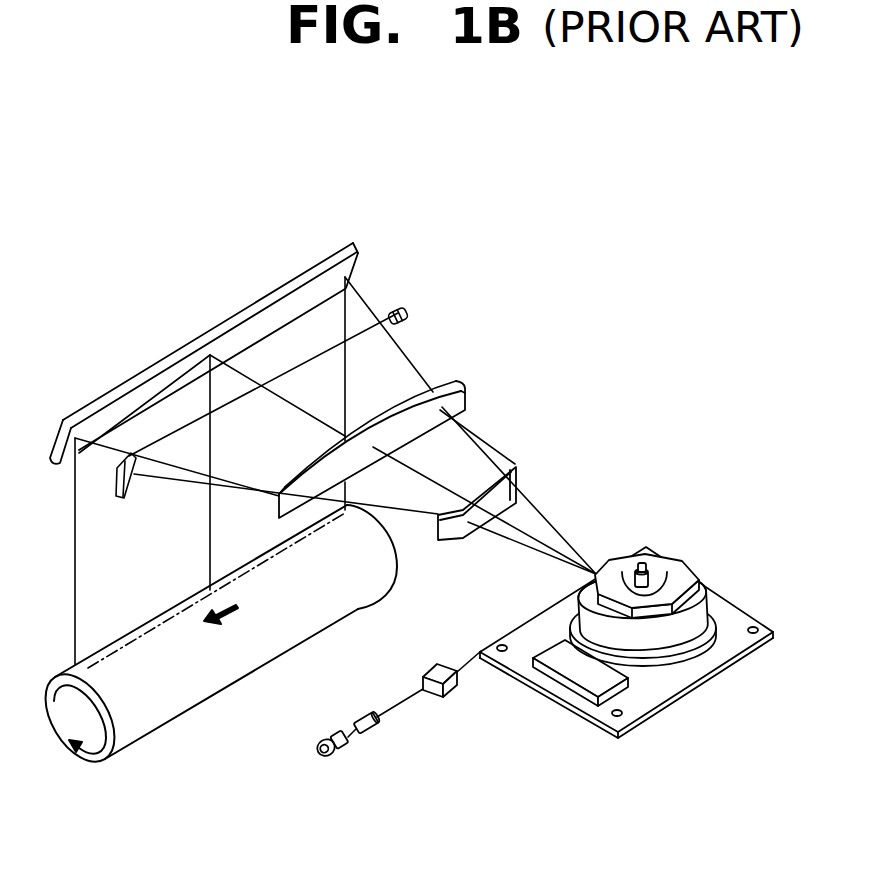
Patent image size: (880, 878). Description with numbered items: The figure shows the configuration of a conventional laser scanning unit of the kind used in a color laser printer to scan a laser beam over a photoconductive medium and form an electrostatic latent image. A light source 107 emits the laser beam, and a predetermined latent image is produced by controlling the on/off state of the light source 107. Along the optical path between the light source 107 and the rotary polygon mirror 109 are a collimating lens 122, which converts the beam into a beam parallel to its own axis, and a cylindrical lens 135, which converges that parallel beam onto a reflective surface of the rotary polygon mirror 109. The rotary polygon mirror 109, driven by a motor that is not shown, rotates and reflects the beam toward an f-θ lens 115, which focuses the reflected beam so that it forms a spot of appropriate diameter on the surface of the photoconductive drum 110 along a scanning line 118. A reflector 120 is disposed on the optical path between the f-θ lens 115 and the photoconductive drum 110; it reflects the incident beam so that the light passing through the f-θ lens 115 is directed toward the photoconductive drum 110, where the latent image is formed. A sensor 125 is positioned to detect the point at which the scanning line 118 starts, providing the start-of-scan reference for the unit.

The light source 107 is at (343, 748).
The rotary polygon mirror 109 is at (648, 566).
The photoconductive drum 110 is at (154, 733).
The f-θ lens 115 is at (517, 468).
The scanning line 118 is at (163, 626).
The reflector 120 is at (207, 332).
The collimating lens 122 is at (373, 731).
The sensor 125 is at (408, 311).
The cylindrical lens 135 is at (448, 691).